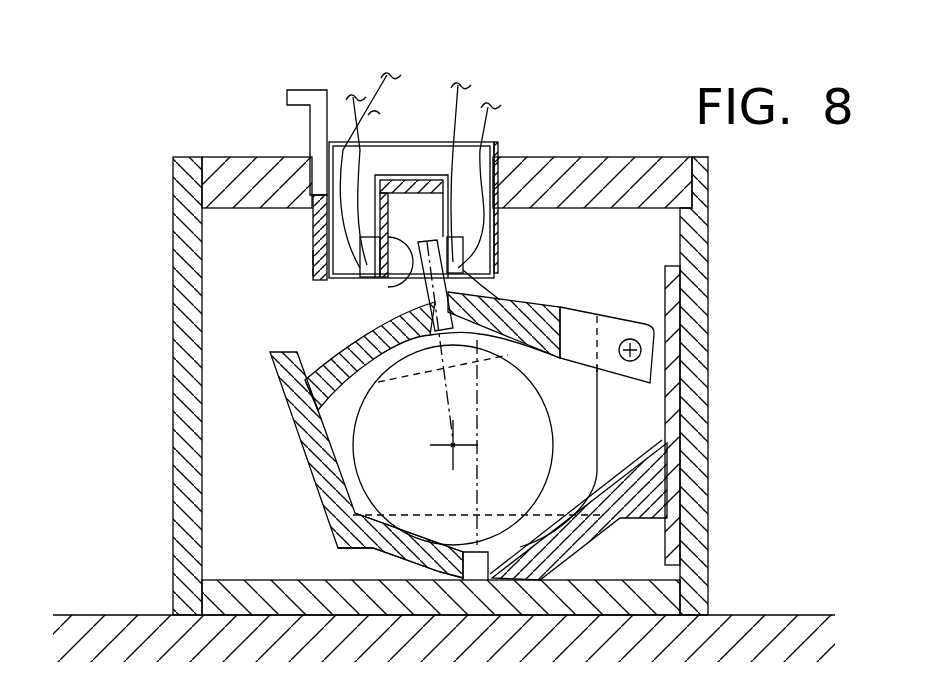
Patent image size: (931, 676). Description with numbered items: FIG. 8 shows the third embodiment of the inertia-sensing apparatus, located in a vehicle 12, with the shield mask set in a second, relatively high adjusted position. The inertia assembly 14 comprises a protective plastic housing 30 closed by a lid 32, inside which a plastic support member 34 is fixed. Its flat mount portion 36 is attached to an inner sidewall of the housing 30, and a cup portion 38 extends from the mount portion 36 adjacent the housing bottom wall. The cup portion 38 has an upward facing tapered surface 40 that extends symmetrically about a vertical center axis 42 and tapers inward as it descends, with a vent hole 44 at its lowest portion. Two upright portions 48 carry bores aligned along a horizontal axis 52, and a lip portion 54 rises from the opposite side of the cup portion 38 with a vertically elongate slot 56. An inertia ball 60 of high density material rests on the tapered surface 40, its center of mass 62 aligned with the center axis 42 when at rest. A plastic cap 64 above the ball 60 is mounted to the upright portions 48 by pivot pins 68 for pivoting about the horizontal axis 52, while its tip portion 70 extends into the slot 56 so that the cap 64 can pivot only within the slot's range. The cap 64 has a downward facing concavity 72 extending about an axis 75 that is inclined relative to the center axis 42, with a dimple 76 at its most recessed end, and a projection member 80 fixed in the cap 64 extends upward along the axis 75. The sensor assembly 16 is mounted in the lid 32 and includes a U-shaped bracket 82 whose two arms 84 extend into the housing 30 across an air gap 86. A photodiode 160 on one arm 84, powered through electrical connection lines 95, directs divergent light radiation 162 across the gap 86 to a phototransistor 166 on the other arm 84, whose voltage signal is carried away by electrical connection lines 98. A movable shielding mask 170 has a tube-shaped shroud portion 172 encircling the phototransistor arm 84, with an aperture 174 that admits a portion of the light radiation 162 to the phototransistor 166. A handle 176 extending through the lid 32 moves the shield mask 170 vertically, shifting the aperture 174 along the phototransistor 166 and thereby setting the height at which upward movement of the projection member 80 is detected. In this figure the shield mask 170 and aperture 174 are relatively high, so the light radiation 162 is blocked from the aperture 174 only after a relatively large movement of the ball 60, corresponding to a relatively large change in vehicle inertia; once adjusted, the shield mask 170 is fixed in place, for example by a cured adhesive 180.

The vehicle 12 is at (128, 611).
The inertia assembly 14 is at (383, 365).
The sensor assembly 16 is at (406, 184).
The housing 30 is at (180, 348).
The lid 32 is at (612, 168).
The support member 34 is at (330, 540).
The mount portion 36 is at (665, 280).
The cup portion 38 is at (553, 548).
The tapered surface 40 is at (550, 528).
The center axis 42 is at (478, 462).
The vent hole 44 is at (445, 577).
The upright portion 48 is at (660, 320).
The horizontal axis 52 is at (628, 362).
The lip portion 54 is at (441, 427).
The vertically elongate slot 56 is at (312, 446).
The inertia ball 60 is at (476, 442).
The center of mass 62 is at (453, 450).
The cap 64 is at (534, 311).
The pivot pin 68 is at (636, 361).
The tip portion 70 is at (333, 378).
The downward facing concavity 72 is at (516, 360).
The axis 75 is at (455, 360).
The dimple 76 is at (440, 348).
The projection member 80 is at (489, 340).
The bracket 82 is at (443, 147).
The arm 84 is at (313, 238).
The air gap 86 is at (400, 303).
The electrical connection lines 95 is at (488, 104).
The electrical connection lines 98 is at (373, 112).
The photodiode 160 is at (463, 290).
The light radiation 162 is at (445, 240).
The phototransistor 166 is at (365, 285).
The shielding mask 170 is at (306, 272).
The shroud portion 172 is at (313, 257).
The aperture 174 is at (420, 274).
The handle 176 is at (293, 90).
The cured adhesive 180 is at (334, 140).